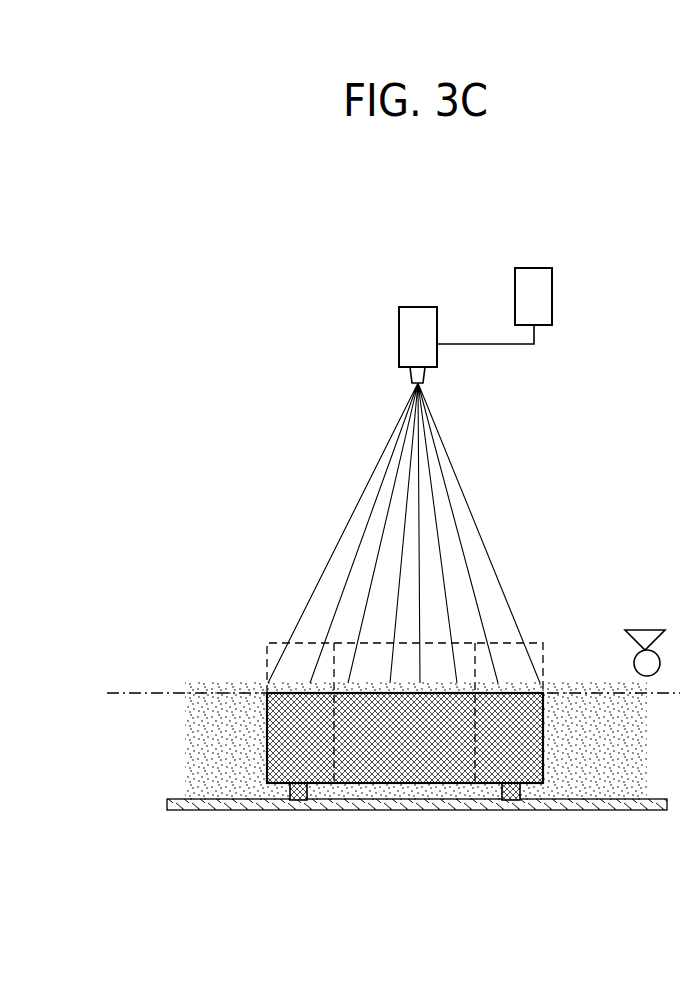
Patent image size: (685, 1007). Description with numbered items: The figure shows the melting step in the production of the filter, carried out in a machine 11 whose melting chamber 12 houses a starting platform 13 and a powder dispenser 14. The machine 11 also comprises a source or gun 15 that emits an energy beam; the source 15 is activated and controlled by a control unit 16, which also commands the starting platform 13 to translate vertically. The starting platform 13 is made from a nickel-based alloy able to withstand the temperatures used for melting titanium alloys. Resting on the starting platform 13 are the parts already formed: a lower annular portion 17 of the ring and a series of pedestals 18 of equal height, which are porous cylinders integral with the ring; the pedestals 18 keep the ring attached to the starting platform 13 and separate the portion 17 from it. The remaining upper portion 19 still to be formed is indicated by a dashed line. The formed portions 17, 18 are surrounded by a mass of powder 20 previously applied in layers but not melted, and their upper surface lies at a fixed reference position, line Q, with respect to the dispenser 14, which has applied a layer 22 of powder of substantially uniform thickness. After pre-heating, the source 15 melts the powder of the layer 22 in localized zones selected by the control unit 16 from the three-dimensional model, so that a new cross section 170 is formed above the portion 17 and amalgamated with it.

The machine 11 is at (323, 862).
The melting chamber 12 is at (578, 503).
The starting platform 13 is at (608, 805).
The powder dispenser 14 is at (645, 630).
The source or gun 15 is at (400, 340).
The control unit 16 is at (543, 290).
The lower annular portion 17 is at (416, 760).
The pedestals 18 is at (522, 795).
The remaining upper portion 19 is at (265, 655).
The mass of powder 20 is at (236, 747).
The layer of powder 22 is at (222, 682).
The new cross section 170 is at (390, 683).
The reference position line Q is at (155, 693).